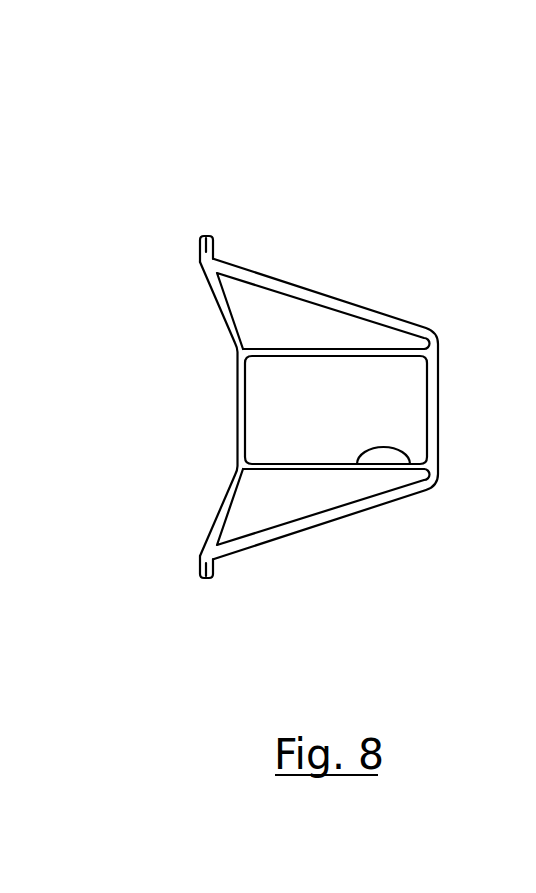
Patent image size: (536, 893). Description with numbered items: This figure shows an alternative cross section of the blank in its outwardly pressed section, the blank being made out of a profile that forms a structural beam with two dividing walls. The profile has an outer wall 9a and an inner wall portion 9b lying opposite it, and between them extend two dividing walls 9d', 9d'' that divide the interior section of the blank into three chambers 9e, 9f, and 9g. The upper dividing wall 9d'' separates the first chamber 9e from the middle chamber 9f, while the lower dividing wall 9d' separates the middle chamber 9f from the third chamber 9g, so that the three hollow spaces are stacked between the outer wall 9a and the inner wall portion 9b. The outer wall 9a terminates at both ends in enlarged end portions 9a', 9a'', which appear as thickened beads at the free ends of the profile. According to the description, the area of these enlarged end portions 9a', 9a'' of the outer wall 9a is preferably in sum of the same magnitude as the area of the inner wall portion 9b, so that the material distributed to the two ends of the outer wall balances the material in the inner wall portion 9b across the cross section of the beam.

The outer wall 9a is at (196, 409).
The enlarged end portion 9a' is at (251, 618).
The enlarged end portion 9a'' is at (149, 181).
The inner wall portion 9b is at (440, 380).
The dividing wall 9d' is at (383, 517).
The dividing wall 9d'' is at (333, 222).
The chamber 9e is at (267, 320).
The chamber 9f is at (303, 427).
The chamber 9g is at (343, 488).
The width dimension A is at (428, 424).